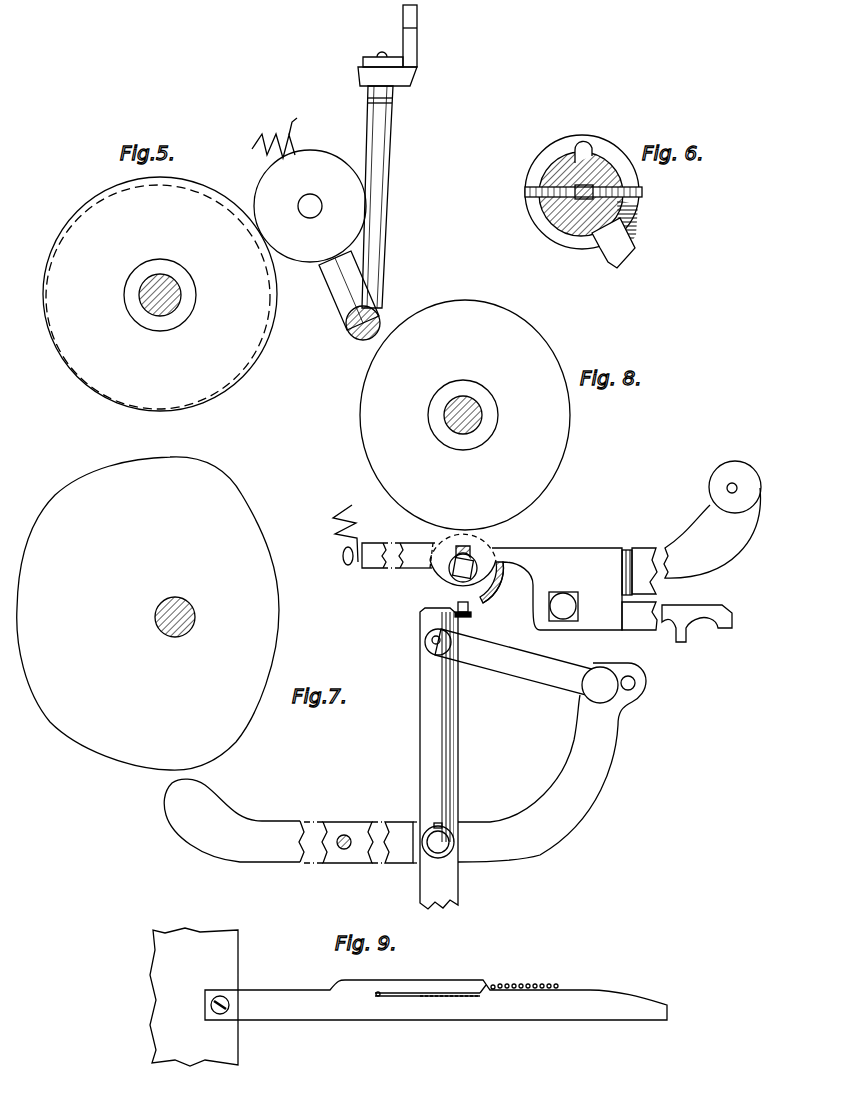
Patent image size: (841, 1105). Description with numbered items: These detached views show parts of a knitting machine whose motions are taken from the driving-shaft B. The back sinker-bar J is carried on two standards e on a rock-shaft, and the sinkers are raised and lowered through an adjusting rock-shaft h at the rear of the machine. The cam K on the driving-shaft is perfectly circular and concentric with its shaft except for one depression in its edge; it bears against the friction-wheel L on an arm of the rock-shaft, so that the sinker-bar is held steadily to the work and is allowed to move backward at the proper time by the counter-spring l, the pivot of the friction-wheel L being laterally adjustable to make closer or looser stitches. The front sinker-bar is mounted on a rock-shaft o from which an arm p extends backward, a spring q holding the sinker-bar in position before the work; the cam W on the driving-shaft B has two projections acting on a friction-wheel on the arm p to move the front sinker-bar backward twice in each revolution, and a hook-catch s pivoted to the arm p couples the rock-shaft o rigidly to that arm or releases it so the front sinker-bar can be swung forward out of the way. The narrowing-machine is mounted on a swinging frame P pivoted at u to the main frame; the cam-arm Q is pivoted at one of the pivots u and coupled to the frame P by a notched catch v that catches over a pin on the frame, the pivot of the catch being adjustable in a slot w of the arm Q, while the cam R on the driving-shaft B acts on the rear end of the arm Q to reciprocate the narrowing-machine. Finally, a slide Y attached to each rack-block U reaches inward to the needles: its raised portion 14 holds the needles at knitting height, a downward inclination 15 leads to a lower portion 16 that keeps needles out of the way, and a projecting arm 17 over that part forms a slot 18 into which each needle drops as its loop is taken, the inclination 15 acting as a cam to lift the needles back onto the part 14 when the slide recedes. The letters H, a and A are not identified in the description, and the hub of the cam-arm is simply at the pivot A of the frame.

In FIG. 5, the cam K is at (160, 294).
In FIG. 5, the driving-shaft B is at (160, 295).
In FIG. 8, the driving-shaft B is at (463, 415).
In FIG. 7, the driving-shaft B is at (175, 617).
In FIG. 5, the friction-wheel L is at (310, 206).
In FIG. 5, the counter-spring l is at (275, 137).
In FIG. 5, the back sinker-bar J is at (390, 45).
In FIG. 5, the standards e is at (377, 197).
In FIG. 5, the adjusting rock-shaft h is at (349, 295).
In FIG. 6, the adjusting rock-shaft h is at (613, 243).
In FIG. 6, the hub H is at (583, 192).
In FIG. 8, the cam W is at (465, 415).
In FIG. 7, the cam R is at (148, 613).
In FIG. 7, the spring q is at (351, 535).
In FIG. 7, the arm p is at (561, 533).
In FIG. 7, the hub a is at (490, 546).
In FIG. 7, the rock-shaft o is at (735, 487).
In FIG. 7, the hook-catch s is at (697, 623).
In FIG. 7, the swinging frame P is at (439, 758).
In FIG. 7, the notched catch v is at (521, 666).
In FIG. 7, the slot w is at (628, 684).
In FIG. 7, the cam-arm Q is at (405, 763).
In FIG. 7, the pivots u is at (438, 840).
In FIG. 7, the frame A is at (434, 883).
In FIG. 9, the rack-block U is at (194, 997).
In FIG. 9, the slide Y is at (436, 1000).
In FIG. 9, the raised portion 14 is at (524, 992).
In FIG. 9, the downward inclination 15 is at (488, 992).
In FIG. 9, the lower portion 16 is at (450, 998).
In FIG. 9, the projecting arm 17 is at (427, 986).
In FIG. 9, the slot 18 is at (372, 993).